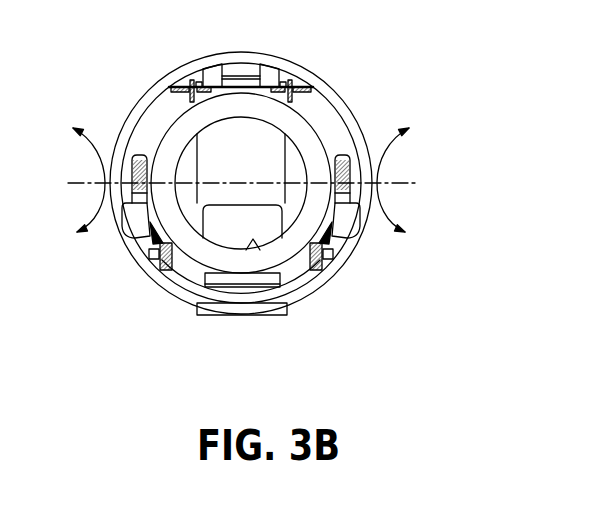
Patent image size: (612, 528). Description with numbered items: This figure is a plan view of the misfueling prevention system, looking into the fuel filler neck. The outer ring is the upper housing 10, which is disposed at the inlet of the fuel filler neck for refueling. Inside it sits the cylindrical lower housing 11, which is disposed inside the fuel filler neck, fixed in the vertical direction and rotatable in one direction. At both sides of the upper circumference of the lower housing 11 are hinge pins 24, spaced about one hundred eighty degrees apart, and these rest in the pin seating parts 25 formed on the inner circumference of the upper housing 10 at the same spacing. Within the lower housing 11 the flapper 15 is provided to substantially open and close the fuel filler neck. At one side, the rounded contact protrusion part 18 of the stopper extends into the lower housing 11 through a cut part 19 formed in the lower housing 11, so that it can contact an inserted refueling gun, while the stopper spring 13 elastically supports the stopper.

The upper housing 10 is at (347, 102).
The lower housing 11 is at (293, 115).
The stopper spring 13 is at (327, 227).
The flapper 15 is at (278, 167).
The contact protrusion part 18 is at (232, 228).
The cut part 19 is at (252, 240).
The hinge pin 24 is at (143, 165).
The pin seating part 25 is at (142, 233).